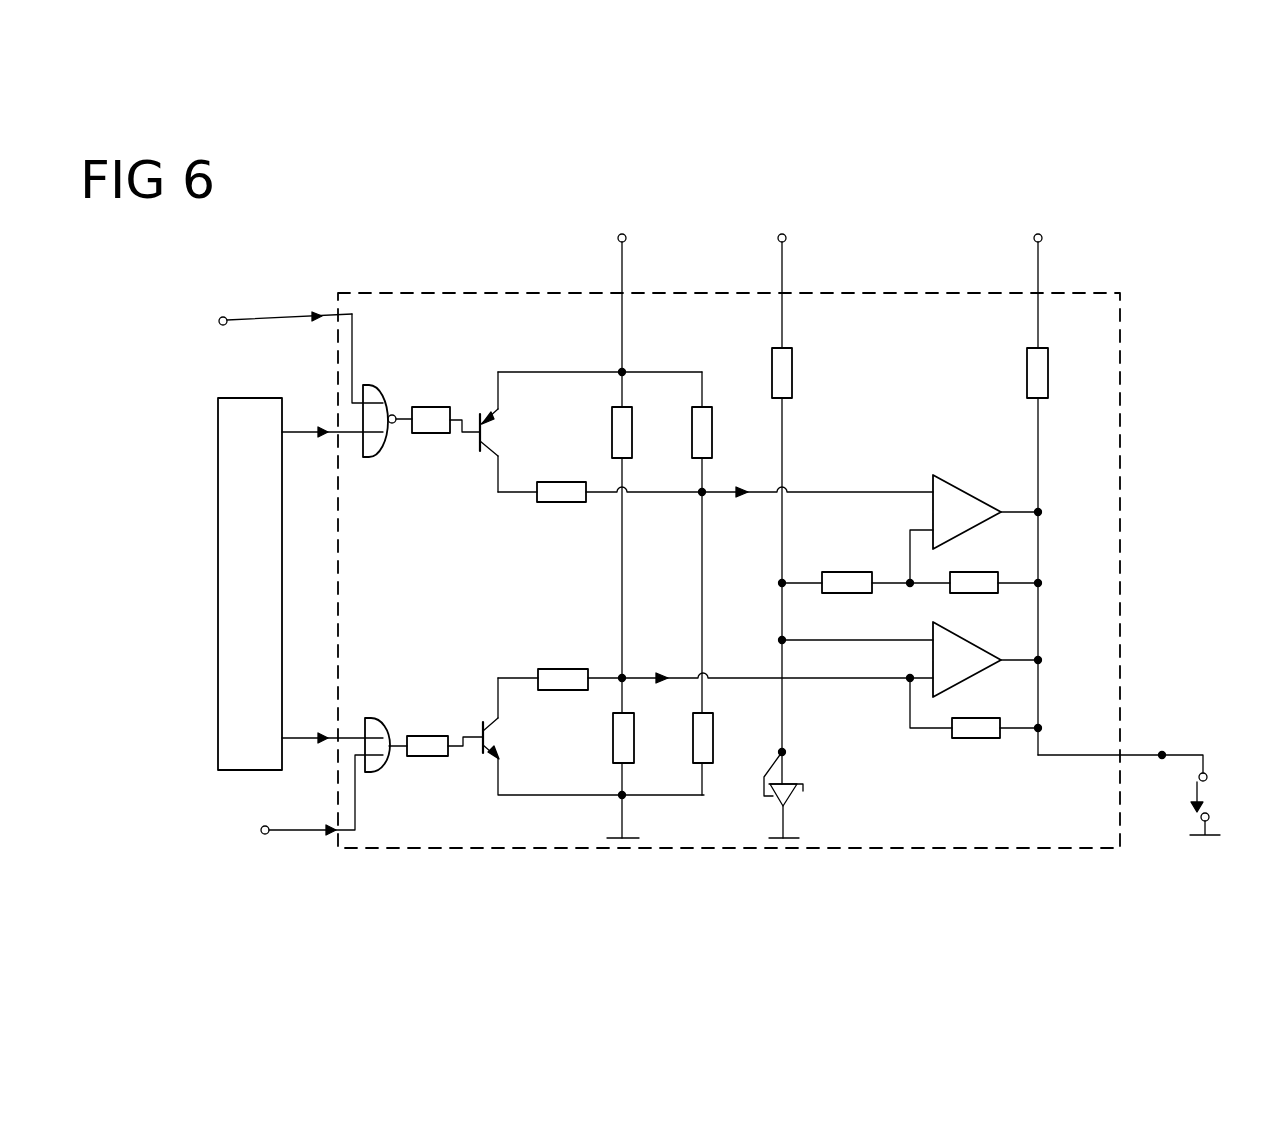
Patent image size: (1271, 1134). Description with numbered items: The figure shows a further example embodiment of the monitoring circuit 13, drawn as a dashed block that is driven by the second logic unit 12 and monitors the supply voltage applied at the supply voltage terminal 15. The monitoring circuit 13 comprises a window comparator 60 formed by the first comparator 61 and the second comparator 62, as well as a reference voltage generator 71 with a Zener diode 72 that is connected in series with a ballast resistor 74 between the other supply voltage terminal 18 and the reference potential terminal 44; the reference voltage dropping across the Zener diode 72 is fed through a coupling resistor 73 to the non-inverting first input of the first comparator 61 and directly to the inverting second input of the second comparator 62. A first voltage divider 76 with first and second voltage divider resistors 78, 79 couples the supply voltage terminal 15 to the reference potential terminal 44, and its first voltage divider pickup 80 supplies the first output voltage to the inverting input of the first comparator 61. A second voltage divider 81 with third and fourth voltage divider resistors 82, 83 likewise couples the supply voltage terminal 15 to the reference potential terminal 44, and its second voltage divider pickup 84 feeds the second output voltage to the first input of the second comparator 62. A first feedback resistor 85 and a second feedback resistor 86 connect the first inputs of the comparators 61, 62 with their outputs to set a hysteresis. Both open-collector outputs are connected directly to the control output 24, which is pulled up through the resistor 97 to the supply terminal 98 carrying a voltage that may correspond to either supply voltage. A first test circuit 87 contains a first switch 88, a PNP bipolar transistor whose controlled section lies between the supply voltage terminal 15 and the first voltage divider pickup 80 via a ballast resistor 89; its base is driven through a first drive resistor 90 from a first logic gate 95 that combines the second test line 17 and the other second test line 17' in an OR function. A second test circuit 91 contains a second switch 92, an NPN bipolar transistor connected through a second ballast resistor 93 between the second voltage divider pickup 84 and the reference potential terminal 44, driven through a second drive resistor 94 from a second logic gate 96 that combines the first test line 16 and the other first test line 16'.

The second logic unit 12 is at (216, 510).
The monitoring circuit 13 is at (1148, 214).
The supply voltage terminal 15 is at (626, 243).
The first test line 16 is at (332, 730).
The other first test line 16' is at (322, 830).
The second test line 17 is at (332, 421).
The other second test line 17' is at (301, 337).
The other supply voltage terminal 18 is at (786, 243).
The control output 24 is at (1162, 750).
The reference potential terminal 44 is at (620, 838).
The window comparator 60 is at (1085, 289).
The first comparator 61 is at (971, 491).
The second comparator 62 is at (976, 650).
The reference voltage generator 71 is at (848, 400).
The Zener diode 72 is at (800, 796).
The coupling resistor 73 is at (838, 570).
The ballast resistor 74 is at (792, 384).
The first voltage divider 76 is at (708, 360).
The first voltage divider resistor 78 is at (714, 440).
The second voltage divider resistor 79 is at (714, 736).
The first voltage divider pickup 80 is at (706, 496).
The second voltage divider 81 is at (590, 357).
The third voltage divider resistor 82 is at (612, 430).
The fourth voltage divider resistor 83 is at (612, 742).
The second voltage divider pickup 84 is at (624, 676).
The first feedback resistor 85 is at (980, 572).
The second feedback resistor 86 is at (984, 740).
The first test circuit 87 is at (498, 534).
The first switch 88 is at (500, 432).
The ballast resistor 89 is at (564, 504).
The first drive resistor 90 is at (432, 434).
The second test circuit 91 is at (478, 672).
The second switch 92 is at (500, 735).
The second ballast resistor 93 is at (564, 668).
The second drive resistor 94 is at (418, 734).
The first logic gate 95 is at (372, 458).
The second logic gate 96 is at (376, 720).
The resistor 97 is at (1048, 372).
The supply terminal 98 is at (1042, 243).